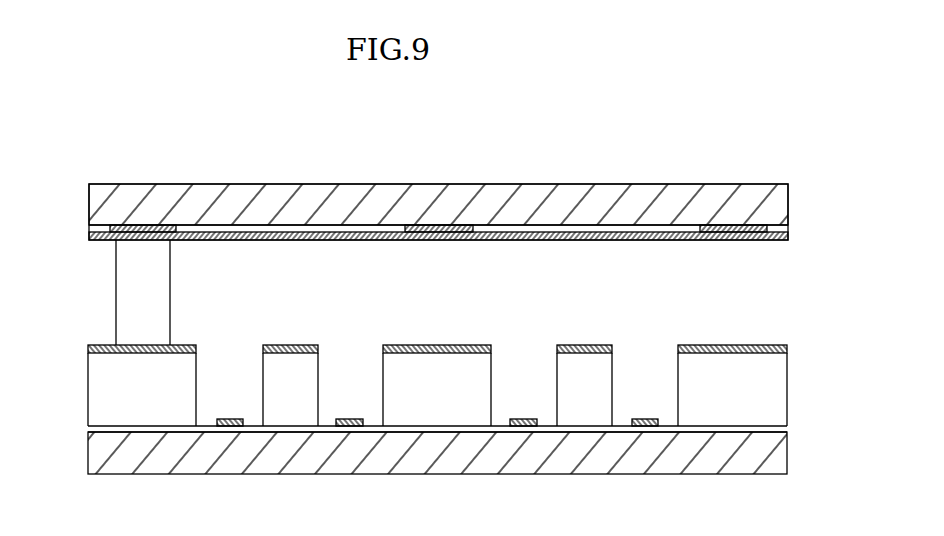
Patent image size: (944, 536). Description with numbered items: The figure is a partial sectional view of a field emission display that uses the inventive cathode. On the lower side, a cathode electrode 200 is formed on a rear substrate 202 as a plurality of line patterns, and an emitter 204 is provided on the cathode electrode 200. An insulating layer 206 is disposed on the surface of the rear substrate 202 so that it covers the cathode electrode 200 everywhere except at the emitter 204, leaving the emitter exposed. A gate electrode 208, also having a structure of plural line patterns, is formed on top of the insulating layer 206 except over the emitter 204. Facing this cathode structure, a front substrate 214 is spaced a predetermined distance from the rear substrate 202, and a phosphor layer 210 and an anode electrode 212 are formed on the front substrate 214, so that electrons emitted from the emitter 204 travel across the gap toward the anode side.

The cathode electrode 200 is at (266, 433).
The rear substrate 202 is at (503, 470).
The emitter 204 is at (232, 427).
The insulating layer 206 is at (100, 398).
The gate electrode 208 is at (99, 346).
The phosphor layer 210 is at (287, 229).
The anode electrode 212 is at (505, 236).
The front substrate 214 is at (383, 190).